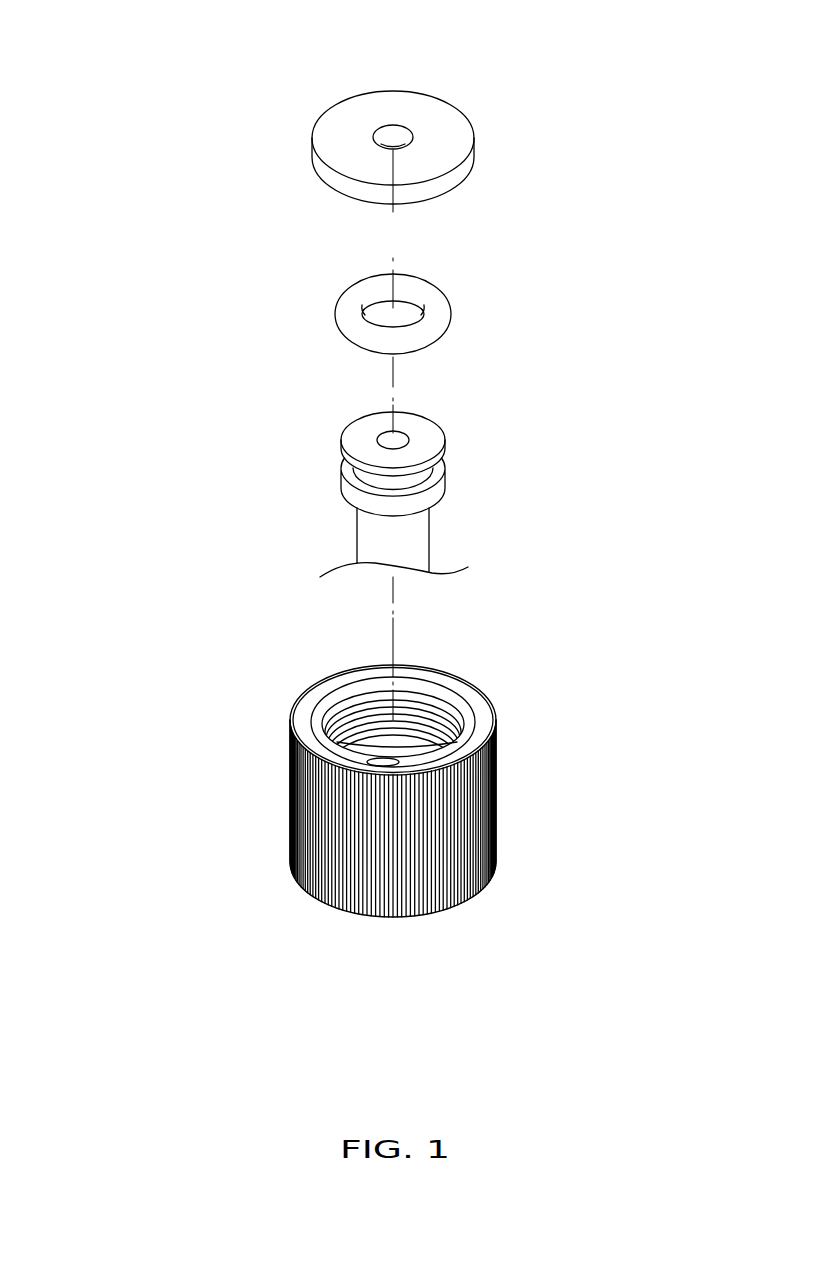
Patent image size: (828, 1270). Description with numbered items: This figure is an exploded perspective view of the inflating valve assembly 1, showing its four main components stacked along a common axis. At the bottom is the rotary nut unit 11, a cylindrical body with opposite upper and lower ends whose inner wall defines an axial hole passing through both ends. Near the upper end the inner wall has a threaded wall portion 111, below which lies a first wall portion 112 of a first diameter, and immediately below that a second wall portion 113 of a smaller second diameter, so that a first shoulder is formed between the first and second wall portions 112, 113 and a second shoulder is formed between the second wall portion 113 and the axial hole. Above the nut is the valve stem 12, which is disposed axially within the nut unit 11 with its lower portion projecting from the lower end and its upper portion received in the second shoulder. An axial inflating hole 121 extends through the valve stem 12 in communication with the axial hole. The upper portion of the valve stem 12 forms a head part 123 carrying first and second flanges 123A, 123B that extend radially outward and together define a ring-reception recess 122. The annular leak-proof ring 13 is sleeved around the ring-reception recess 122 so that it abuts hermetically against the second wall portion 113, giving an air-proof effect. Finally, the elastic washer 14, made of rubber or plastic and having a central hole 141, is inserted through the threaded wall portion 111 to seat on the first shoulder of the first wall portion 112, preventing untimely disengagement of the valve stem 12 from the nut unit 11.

The inflating valve assembly 1 is at (228, 2).
The rotary nut unit 11 is at (415, 759).
The threaded wall portion 111 is at (400, 697).
The first wall portion 112 is at (428, 745).
The second wall portion 113 is at (388, 764).
The valve stem 12 is at (411, 471).
The axial inflating hole 121 is at (393, 441).
The ring-reception recess 122 is at (432, 478).
The head part 123 is at (400, 462).
The first flange 123A is at (347, 493).
The second flange 123B is at (347, 452).
The annular leak-proof ring 13 is at (432, 298).
The elastic washer 14 is at (431, 105).
The central hole 141 is at (393, 132).